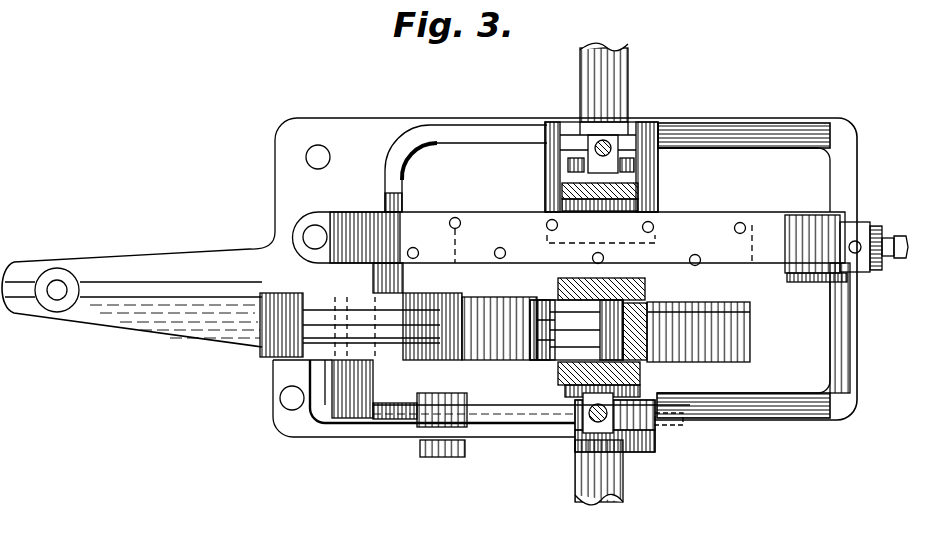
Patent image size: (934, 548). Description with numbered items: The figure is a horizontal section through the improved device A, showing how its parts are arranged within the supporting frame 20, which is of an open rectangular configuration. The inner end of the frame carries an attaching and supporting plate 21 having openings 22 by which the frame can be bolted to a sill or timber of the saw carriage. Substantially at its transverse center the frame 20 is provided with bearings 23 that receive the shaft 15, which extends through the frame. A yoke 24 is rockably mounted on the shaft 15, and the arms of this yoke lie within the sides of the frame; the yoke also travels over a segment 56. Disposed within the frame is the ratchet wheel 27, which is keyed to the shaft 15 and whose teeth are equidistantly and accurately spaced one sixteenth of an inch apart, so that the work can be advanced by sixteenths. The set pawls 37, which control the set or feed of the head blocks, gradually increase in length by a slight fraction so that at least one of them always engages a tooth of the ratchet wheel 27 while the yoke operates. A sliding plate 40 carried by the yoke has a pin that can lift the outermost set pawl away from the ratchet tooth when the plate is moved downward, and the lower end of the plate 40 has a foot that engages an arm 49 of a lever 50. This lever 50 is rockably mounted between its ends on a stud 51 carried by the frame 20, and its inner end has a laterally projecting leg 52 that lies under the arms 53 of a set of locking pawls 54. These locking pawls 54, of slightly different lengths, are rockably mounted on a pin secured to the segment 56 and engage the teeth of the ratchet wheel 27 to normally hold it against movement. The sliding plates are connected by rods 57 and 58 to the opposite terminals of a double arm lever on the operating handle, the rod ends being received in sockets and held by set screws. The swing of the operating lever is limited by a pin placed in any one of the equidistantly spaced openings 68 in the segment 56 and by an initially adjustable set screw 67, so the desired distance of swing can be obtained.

The shaft 15 is at (618, 84).
The supporting frame 20 is at (412, 124).
The attaching and supporting plate 21 is at (290, 181).
The openings 22 is at (310, 148).
The bearings 23 is at (655, 437).
The yoke 24 is at (640, 195).
The slow ratchet wheel 27 is at (703, 348).
The set pawls 37 is at (663, 303).
The sliding plate 40 is at (653, 397).
The arm of lever 49 is at (680, 422).
The lever 50 is at (483, 410).
The stud 51 is at (455, 395).
The laterally projecting leg 52 is at (360, 388).
The arms of locking pawls 53 is at (298, 295).
The locking pawls 54 is at (428, 320).
The segment 56 is at (700, 232).
The rod 57 is at (597, 417).
The rod 58 is at (606, 140).
The set screw 67 is at (898, 238).
The openings 68 is at (745, 223).
The improved device A is at (685, 135).